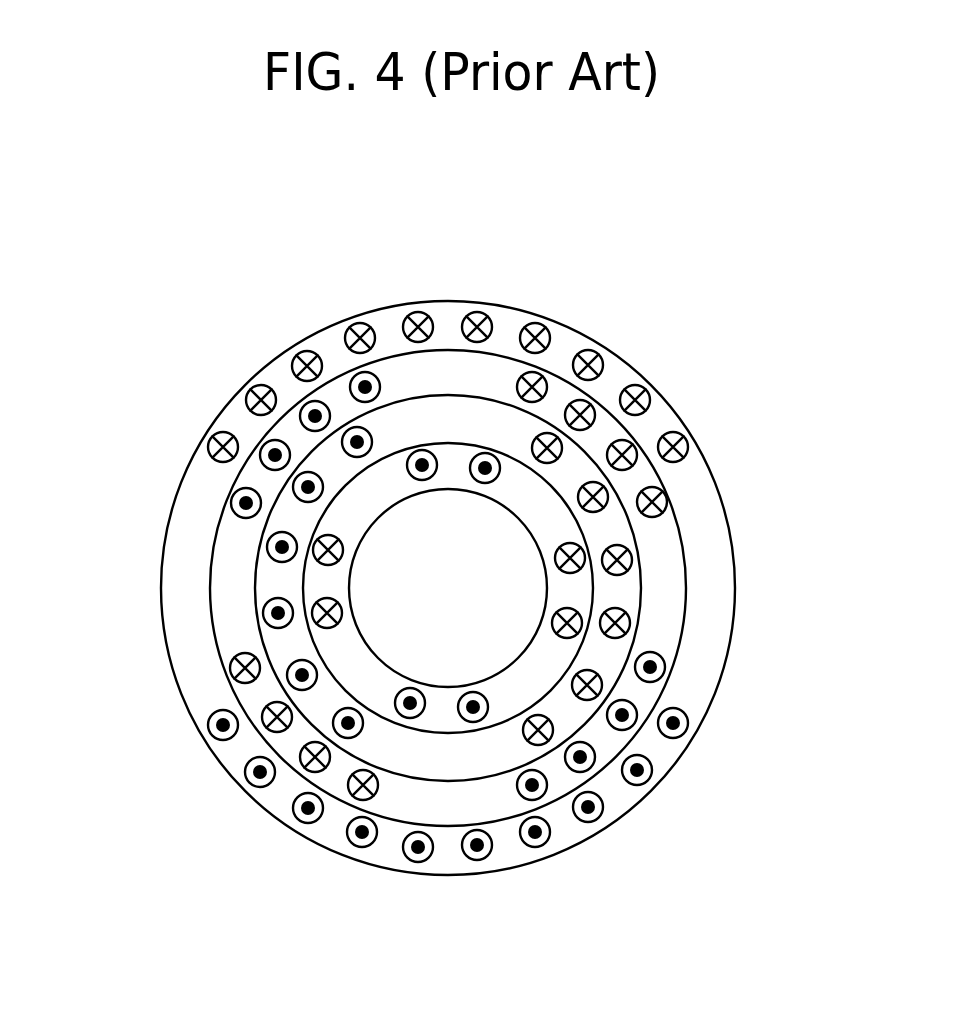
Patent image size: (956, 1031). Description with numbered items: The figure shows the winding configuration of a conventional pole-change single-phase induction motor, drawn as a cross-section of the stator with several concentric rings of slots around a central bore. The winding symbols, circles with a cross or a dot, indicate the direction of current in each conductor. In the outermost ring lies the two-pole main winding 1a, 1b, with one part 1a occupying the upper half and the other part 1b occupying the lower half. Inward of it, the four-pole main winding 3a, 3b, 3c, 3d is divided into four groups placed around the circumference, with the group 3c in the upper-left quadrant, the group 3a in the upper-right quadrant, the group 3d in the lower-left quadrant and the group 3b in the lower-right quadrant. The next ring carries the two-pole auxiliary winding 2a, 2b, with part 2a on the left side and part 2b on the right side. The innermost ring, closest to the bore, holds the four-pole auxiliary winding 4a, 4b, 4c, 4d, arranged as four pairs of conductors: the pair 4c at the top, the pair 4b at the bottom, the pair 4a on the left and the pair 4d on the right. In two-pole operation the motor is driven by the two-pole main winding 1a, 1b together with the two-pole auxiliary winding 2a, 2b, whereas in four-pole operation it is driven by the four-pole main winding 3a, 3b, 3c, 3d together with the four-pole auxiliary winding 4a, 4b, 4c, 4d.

The 2-pole main winding 1a is at (618, 377).
The 2-pole main winding 1b is at (618, 797).
The 2-pole auxiliary winding 2a is at (280, 515).
The 2-pole auxiliary winding 2b is at (607, 530).
The 4-pole main winding 3a is at (553, 387).
The 4-pole main winding 3b is at (555, 780).
The 4-pole main winding 3c is at (340, 395).
The 4-pole main winding 3d is at (340, 780).
The 4-pole auxiliary winding 4a is at (320, 577).
The 4-pole auxiliary winding 4b is at (445, 707).
The 4-pole auxiliary winding 4c is at (453, 463).
The 4-pole auxiliary winding 4d is at (593, 588).